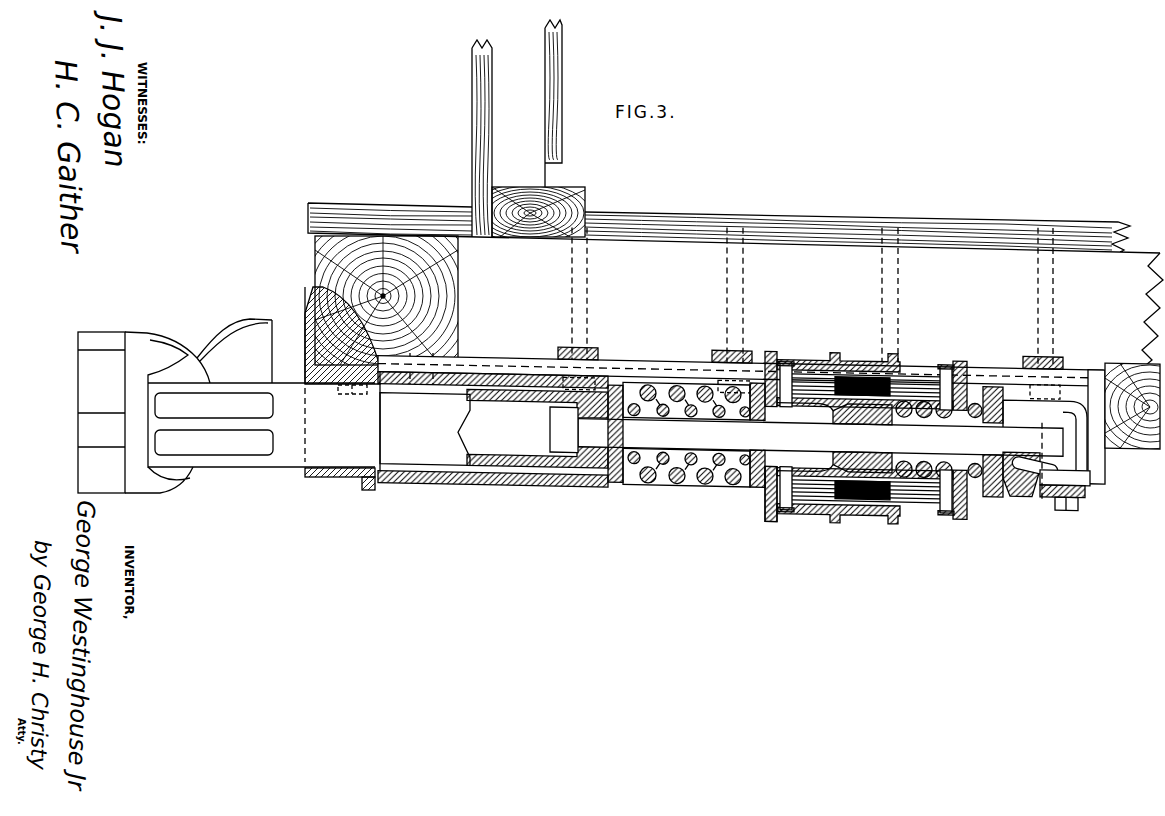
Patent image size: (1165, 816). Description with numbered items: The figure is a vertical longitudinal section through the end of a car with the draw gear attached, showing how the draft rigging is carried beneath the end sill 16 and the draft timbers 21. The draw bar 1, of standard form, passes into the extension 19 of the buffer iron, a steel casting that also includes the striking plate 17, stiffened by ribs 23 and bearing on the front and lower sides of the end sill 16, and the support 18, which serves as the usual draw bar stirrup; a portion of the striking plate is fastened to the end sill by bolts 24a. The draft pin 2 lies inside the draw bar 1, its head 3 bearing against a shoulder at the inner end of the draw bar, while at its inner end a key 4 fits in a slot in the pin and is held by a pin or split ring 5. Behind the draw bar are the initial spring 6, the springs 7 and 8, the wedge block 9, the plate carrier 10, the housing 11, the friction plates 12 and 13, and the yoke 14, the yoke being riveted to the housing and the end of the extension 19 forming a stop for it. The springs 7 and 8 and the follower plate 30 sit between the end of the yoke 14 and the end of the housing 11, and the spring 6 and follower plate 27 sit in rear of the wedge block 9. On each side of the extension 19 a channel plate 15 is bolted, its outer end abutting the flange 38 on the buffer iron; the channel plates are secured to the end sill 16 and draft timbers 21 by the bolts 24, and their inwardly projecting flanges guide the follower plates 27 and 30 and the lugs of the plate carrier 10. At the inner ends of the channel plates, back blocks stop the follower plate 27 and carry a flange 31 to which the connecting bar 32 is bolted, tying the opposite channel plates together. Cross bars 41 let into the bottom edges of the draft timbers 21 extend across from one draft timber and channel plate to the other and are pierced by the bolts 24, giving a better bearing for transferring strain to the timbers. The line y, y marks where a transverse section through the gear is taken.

The draw bar 1 is at (274, 406).
The draft pin 2 is at (820, 438).
The head 3 is at (564, 430).
The key 4 is at (1045, 436).
The pin or split ring 5 is at (1031, 476).
The initial spring 6 is at (970, 397).
The spring 7 is at (642, 487).
The spring 8 is at (678, 487).
The wedge block 9 is at (860, 421).
The plate carrier 10 is at (963, 501).
The housing 11 is at (790, 510).
The plate 12 is at (905, 508).
The plate 13 is at (778, 511).
The yoke 14 is at (615, 486).
The channel plate 15 is at (1073, 372).
The end sill 16 is at (385, 296).
The striking plate 17 is at (310, 338).
The support 18 is at (340, 479).
The extension 19 is at (500, 489).
The draft timbers 21 is at (843, 311).
The ribs 23 is at (342, 340).
The bolts 24 is at (905, 302).
The bolts 24a is at (383, 296).
The follower plate 27 is at (1002, 491).
The follower plate 30 is at (757, 487).
The flange or lug 31 is at (1090, 471).
The connecting bars 32 is at (1086, 483).
The flange 38 is at (372, 491).
The cross bars 41 is at (752, 351).
The section line y y is at (852, 520).